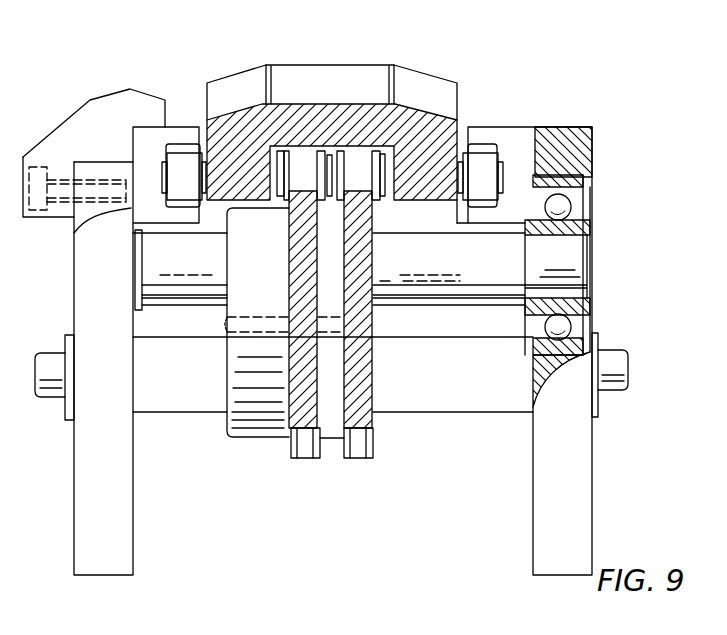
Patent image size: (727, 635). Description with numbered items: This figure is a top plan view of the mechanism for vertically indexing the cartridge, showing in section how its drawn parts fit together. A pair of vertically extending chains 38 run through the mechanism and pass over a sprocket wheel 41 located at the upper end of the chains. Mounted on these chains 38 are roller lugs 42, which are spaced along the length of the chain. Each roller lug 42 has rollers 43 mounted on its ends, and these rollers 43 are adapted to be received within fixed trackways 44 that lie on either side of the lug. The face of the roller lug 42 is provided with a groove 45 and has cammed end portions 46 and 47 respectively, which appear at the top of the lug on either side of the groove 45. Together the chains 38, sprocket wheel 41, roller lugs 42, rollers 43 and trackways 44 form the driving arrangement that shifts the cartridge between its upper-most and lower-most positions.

The chains 38 is at (307, 163).
The sprocket wheel 41 is at (255, 422).
The roller lugs 42 is at (303, 115).
The rollers 43 is at (187, 160).
The fixed trackways 44 is at (150, 132).
The groove 45 is at (297, 72).
The cammed end portion 46 is at (423, 95).
The cammed end portion 47 is at (237, 88).